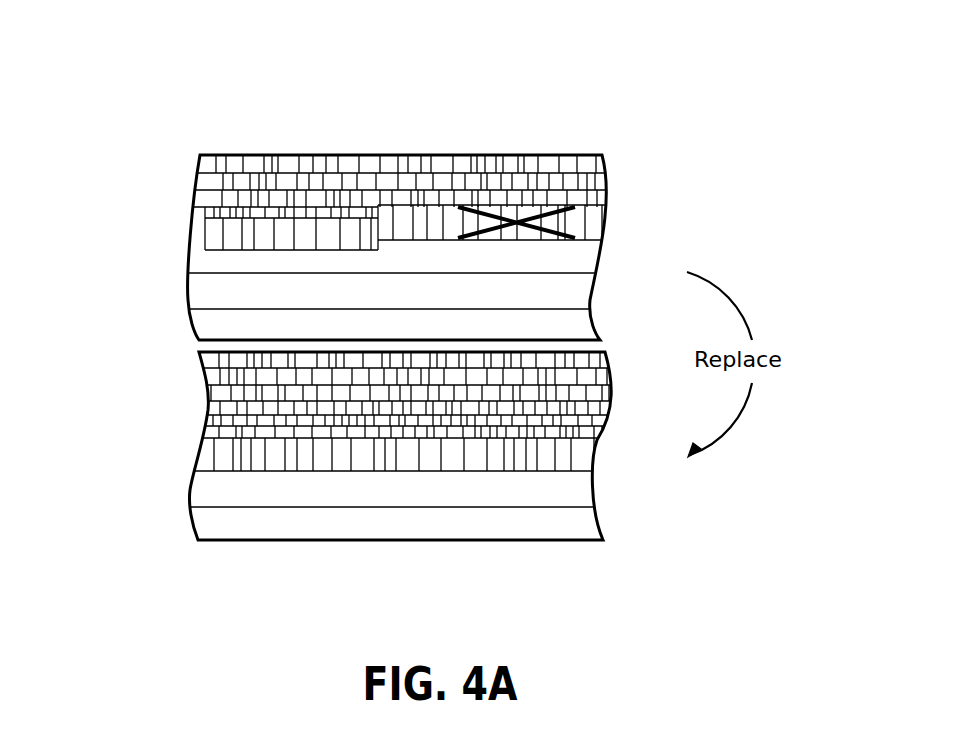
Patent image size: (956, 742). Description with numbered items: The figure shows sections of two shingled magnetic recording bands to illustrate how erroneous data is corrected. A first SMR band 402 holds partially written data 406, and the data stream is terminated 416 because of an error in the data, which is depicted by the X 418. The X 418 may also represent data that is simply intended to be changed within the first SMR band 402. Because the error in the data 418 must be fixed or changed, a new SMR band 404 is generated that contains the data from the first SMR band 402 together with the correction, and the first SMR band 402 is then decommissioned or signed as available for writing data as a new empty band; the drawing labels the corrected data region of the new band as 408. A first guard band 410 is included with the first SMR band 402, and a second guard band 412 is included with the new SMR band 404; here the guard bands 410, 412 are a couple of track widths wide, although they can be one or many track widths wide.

The first SMR band 402 is at (245, 155).
The new SMR band 404 is at (252, 541).
The partially written data 406 is at (615, 153).
The data region of second block 408 is at (618, 353).
The first guard band 410 is at (180, 273).
The second guard band 412 is at (180, 472).
The data stream termination 416 is at (382, 232).
The error in the data (X) 418 is at (527, 207).